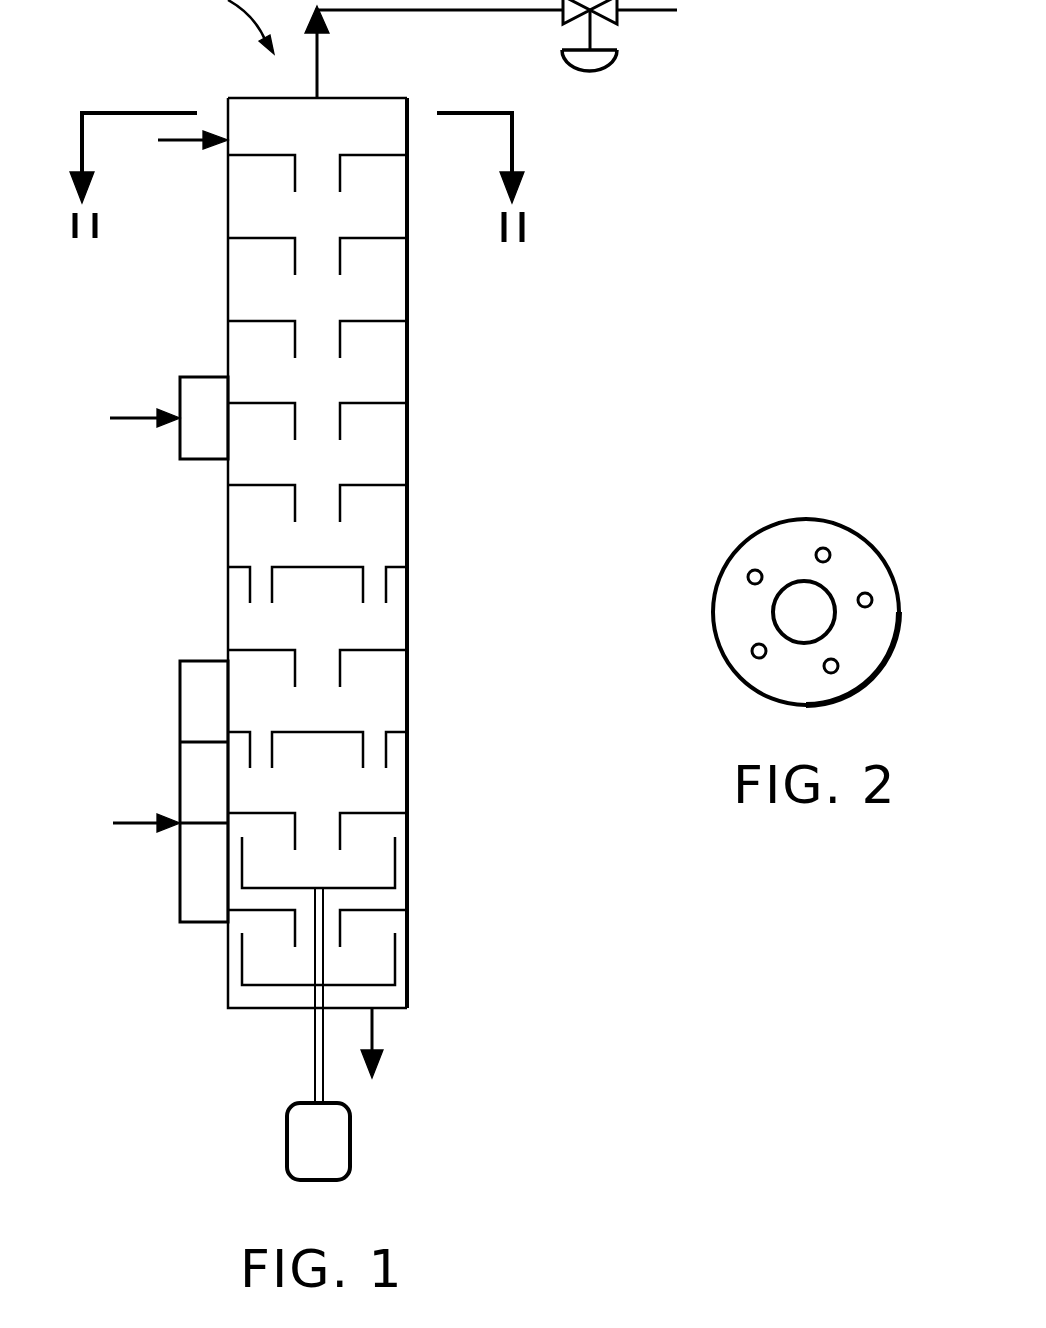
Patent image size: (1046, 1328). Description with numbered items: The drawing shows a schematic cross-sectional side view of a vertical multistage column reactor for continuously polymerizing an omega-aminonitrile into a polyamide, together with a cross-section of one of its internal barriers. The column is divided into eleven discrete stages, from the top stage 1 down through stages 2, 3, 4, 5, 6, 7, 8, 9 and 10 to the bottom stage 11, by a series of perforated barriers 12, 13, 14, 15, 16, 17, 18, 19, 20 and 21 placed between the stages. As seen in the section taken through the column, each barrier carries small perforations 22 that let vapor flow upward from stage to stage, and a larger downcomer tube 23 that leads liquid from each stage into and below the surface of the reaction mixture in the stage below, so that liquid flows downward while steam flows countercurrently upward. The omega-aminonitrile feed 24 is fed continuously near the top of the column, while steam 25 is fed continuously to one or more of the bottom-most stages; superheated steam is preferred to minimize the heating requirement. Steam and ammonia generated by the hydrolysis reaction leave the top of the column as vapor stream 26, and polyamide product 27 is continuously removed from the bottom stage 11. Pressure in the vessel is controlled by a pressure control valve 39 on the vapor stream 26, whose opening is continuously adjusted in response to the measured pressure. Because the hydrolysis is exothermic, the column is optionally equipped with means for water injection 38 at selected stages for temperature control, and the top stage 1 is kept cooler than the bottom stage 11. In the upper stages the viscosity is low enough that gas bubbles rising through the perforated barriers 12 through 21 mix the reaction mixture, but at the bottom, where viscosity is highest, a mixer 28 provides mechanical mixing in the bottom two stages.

In FIG. 1, the top stage 1 is at (317, 126).
In FIG. 1, the stage 2 is at (317, 196).
In FIG. 1, the stage 3 is at (317, 279).
In FIG. 1, the stage 4 is at (317, 362).
In FIG. 1, the stage 5 is at (317, 444).
In FIG. 1, the stage 6 is at (317, 526).
In FIG. 1, the stage 7 is at (317, 608).
In FIG. 1, the stage 8 is at (317, 691).
In FIG. 1, the stage 9 is at (317, 772).
In FIG. 1, the stage 10 is at (317, 861).
In FIG. 1, the bottom stage 11 is at (317, 959).
In FIG. 1, the perforated barrier 12 is at (339, 167).
In FIG. 1, the perforated barrier 13 is at (339, 250).
In FIG. 1, the perforated barrier 14 is at (339, 333).
In FIG. 1, the perforated barrier 15 is at (339, 415).
In FIG. 1, the perforated barrier 16 is at (339, 497).
In FIG. 1, the perforated barrier 17 is at (339, 579).
In FIG. 1, the perforated barrier 18 is at (339, 662).
In FIG. 1, the perforated barrier 19 is at (339, 744).
In FIG. 1, the perforated barrier 20 is at (339, 825).
In FIG. 1, the perforated barrier 21 is at (339, 922).
In FIG. 2, the small perforations 22 is at (828, 548).
In FIG. 2, the downcomer tube 23 is at (790, 582).
In FIG. 1, the omega-aminonitrile feed 24 is at (190, 145).
In FIG. 1, the steam 25 is at (140, 818).
In FIG. 1, the vapor stream 26 is at (322, 62).
In FIG. 1, the polyamide product 27 is at (374, 1025).
In FIG. 1, the mixer 28 is at (297, 1103).
In FIG. 1, the means for water injection 38 is at (144, 406).
In FIG. 1, the pressure control valve 39 is at (617, 28).